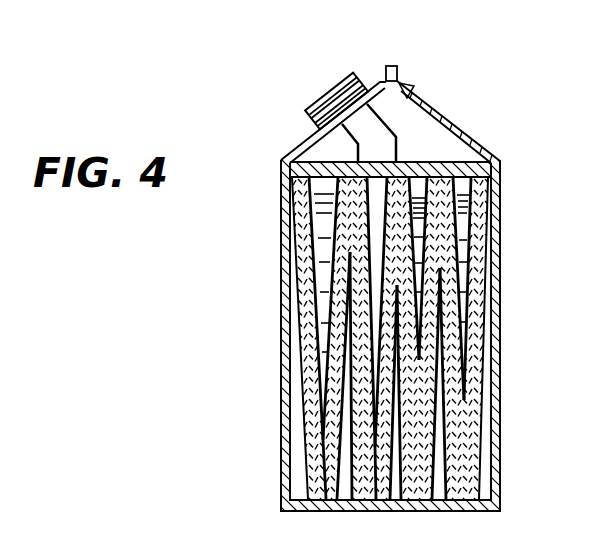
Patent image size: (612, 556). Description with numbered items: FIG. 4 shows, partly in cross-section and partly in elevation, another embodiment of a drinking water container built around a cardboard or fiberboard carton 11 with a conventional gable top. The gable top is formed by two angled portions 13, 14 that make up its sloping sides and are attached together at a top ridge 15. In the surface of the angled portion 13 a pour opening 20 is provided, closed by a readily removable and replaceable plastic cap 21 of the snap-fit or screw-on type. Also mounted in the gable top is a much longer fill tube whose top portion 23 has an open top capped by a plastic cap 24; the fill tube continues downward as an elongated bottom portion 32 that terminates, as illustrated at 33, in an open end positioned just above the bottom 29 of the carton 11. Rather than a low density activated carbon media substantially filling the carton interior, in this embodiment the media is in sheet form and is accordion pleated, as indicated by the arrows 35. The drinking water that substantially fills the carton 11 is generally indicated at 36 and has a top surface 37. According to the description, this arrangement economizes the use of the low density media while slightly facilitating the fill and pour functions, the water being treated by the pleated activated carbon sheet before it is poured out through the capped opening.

The carton 11 is at (498, 325).
The angled portion 13 is at (297, 160).
The angled portion 14 is at (467, 134).
The top ridge 15 is at (400, 72).
The pour opening 20 is at (365, 84).
The plastic cap 21 is at (354, 70).
The fill tube 23 is at (392, 146).
The plastic cap 24 is at (310, 108).
The bottom 29 is at (352, 513).
The bottom portion 32 is at (377, 205).
The open end 33 is at (393, 473).
The arrows 35 is at (351, 408).
The drinking water 36 is at (461, 226).
The top surface 37 is at (463, 184).